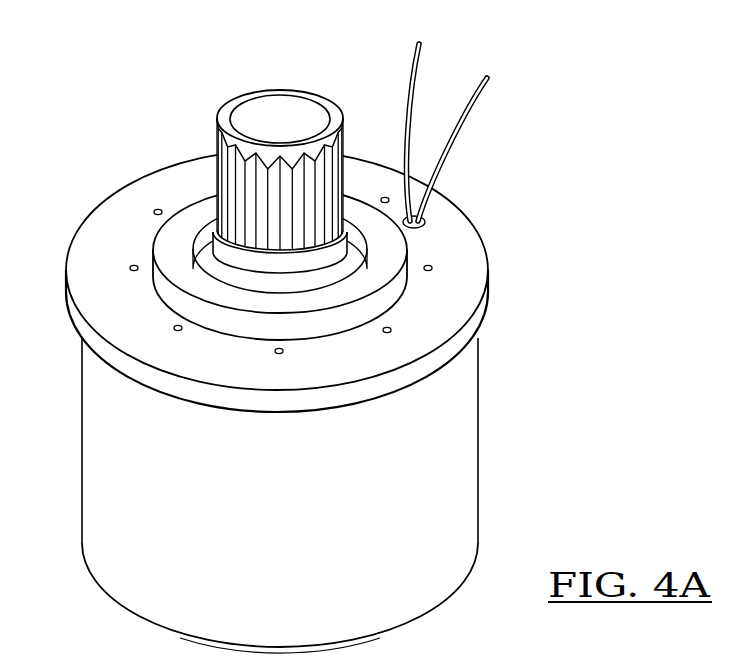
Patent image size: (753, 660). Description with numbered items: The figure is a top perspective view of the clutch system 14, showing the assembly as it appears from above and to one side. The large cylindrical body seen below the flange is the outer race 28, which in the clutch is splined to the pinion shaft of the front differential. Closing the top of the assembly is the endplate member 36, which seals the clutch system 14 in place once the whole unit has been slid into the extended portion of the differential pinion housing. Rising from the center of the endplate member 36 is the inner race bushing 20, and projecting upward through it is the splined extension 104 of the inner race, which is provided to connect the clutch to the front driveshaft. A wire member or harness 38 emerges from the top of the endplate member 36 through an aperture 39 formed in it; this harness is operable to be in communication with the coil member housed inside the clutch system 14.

The clutch system 14 is at (100, 84).
The splined extension 104 is at (215, 145).
The endplate member 36 is at (122, 212).
The wire member or harness 38 is at (386, 96).
The aperture 39 is at (423, 196).
The inner race bushing 20 is at (330, 268).
The outer race 28 is at (508, 442).